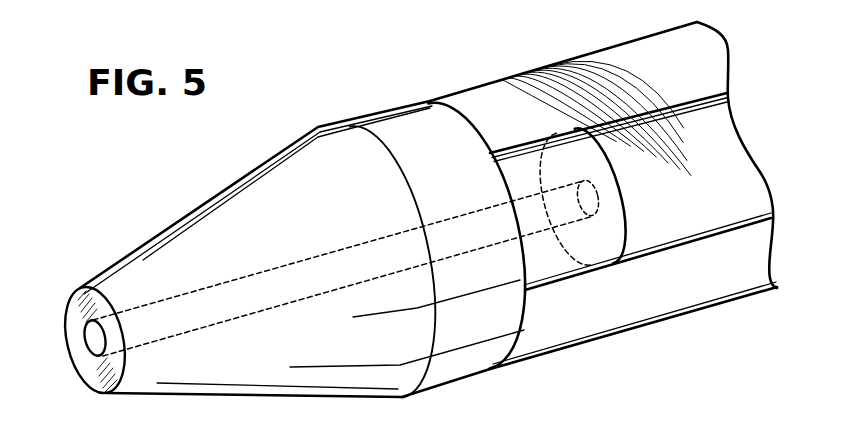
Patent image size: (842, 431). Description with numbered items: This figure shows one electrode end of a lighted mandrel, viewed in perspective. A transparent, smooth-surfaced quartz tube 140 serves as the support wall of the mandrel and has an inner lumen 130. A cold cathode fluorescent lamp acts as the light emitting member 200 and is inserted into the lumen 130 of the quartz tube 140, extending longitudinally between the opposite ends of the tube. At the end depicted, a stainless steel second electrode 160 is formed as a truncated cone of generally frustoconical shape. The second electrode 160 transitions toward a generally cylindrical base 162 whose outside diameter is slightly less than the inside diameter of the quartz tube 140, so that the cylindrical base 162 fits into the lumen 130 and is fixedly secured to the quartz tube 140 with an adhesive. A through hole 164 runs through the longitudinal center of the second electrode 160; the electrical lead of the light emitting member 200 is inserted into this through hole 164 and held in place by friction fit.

The lumen 130 is at (733, 157).
The quartz tube 140 is at (613, 46).
The second electrode 160 is at (366, 133).
The cylindrical base 162 is at (533, 142).
The through hole 164 is at (223, 283).
The light emitting member 200 is at (697, 92).